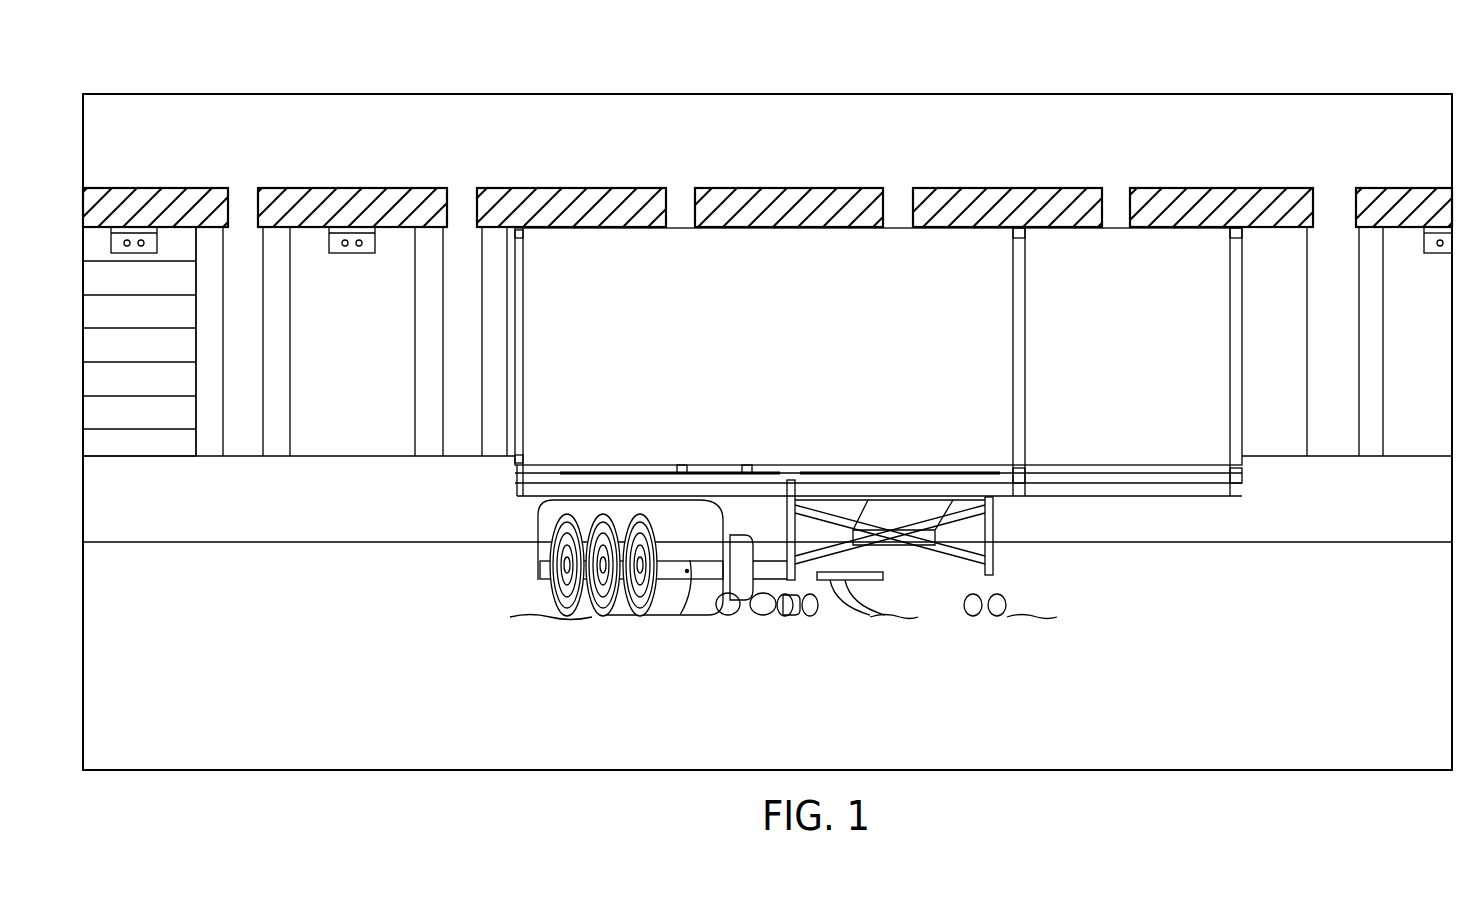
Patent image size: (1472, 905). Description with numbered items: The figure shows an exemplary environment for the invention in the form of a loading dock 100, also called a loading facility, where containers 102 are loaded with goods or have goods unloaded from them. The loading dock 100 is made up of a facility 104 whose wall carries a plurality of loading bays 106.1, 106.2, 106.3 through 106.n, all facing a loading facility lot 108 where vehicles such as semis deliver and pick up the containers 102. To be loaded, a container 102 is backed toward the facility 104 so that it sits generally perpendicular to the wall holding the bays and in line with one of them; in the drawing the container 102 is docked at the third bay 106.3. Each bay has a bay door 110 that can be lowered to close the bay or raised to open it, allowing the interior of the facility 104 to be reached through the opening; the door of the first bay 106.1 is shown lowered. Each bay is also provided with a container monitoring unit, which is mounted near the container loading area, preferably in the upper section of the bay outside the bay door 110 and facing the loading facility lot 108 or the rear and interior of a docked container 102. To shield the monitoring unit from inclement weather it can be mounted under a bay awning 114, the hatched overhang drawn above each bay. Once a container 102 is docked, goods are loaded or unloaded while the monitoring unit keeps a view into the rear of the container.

The loading dock 100 is at (767, 392).
The container 102 is at (1213, 472).
The facility 104 is at (953, 110).
The loading bay 106.1 is at (172, 282).
The loading bay 106.2 is at (369, 287).
The loading bay 106.3 is at (553, 185).
The loading bay 106.n is at (1362, 296).
The loading facility lot 108 is at (497, 658).
The bay door 110 is at (174, 432).
The bay awning 114 is at (123, 205).